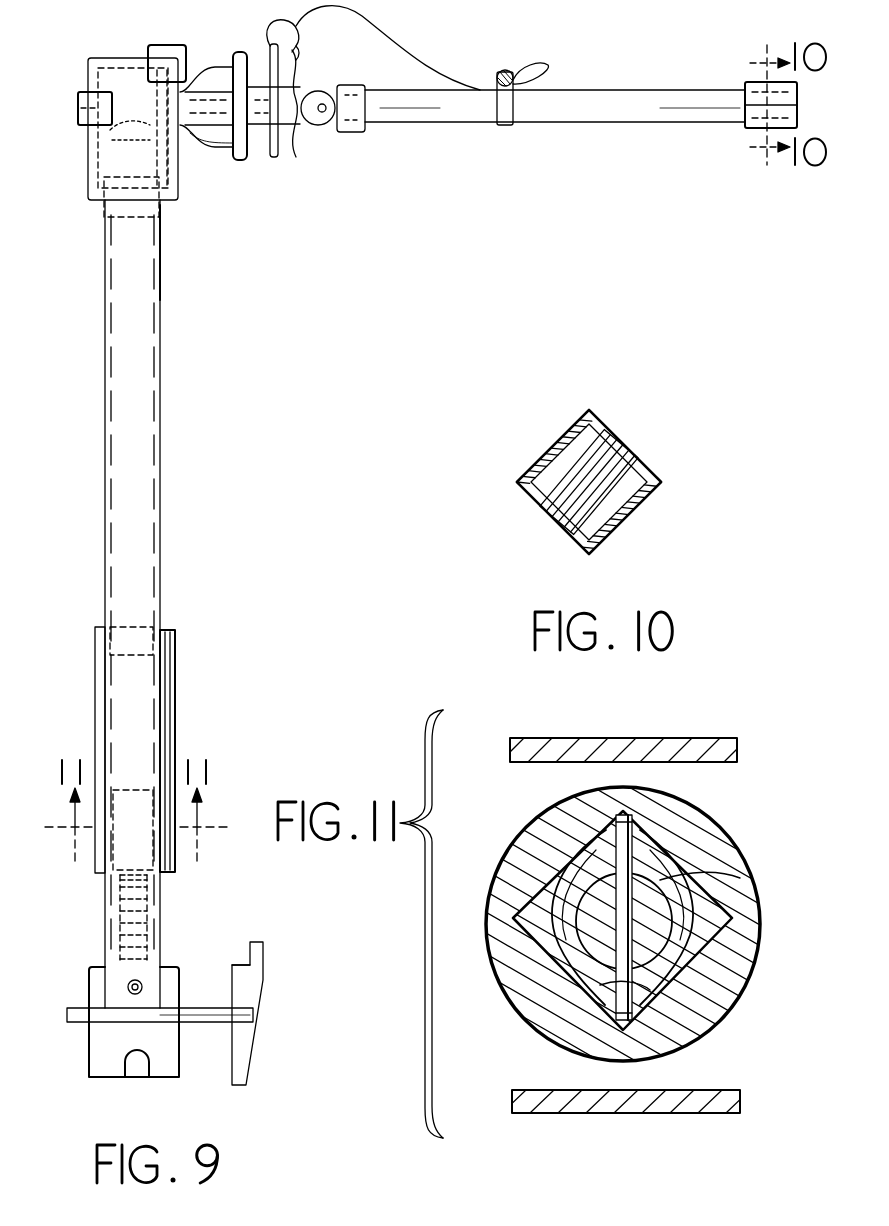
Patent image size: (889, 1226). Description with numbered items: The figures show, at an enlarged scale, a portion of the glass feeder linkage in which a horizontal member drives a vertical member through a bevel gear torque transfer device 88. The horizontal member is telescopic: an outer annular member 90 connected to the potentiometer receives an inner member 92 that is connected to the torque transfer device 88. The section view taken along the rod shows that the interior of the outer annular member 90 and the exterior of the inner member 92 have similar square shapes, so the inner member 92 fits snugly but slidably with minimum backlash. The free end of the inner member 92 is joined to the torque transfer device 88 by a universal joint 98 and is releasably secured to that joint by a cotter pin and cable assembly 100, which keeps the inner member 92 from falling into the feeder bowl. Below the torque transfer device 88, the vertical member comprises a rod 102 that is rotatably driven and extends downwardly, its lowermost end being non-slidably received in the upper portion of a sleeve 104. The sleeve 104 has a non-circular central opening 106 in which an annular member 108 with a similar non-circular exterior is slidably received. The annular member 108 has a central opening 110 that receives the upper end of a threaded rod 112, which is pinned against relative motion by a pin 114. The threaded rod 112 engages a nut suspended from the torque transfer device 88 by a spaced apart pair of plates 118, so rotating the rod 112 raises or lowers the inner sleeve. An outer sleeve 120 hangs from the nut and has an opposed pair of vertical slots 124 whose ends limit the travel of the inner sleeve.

In FIG. 9, the bevel gear torque transfer device 88 is at (88, 80).
In FIG. 9, the outer annular member 90 is at (745, 122).
In FIG. 10, the outer annular member 90 is at (655, 462).
In FIG. 9, the inner member 92 is at (604, 90).
In FIG. 10, the inner member 92 is at (618, 440).
In FIG. 9, the universal joint 98 is at (303, 132).
In FIG. 9, the cotter pin and cable assembly 100 is at (395, 42).
In FIG. 9, the rod 102 is at (105, 385).
In FIG. 11, the rod 102 is at (782, 884).
In FIG. 9, the sleeve 104 is at (95, 657).
In FIG. 11, the sleeve 104 is at (498, 952).
In FIG. 11, the non-circular central opening 106 is at (680, 862).
In FIG. 11, the annular member 108 is at (660, 985).
In FIG. 11, the central opening 110 is at (690, 878).
In FIG. 9, the rod 112 is at (147, 922).
In FIG. 11, the rod 112 is at (690, 935).
In FIG. 11, the pin 114 is at (617, 982).
In FIG. 9, the plates 118 is at (160, 250).
In FIG. 11, the plates 118 is at (612, 702).
In FIG. 9, the outer sleeve 120 is at (89, 1048).
In FIG. 9, the vertical slots 124 is at (121, 1068).